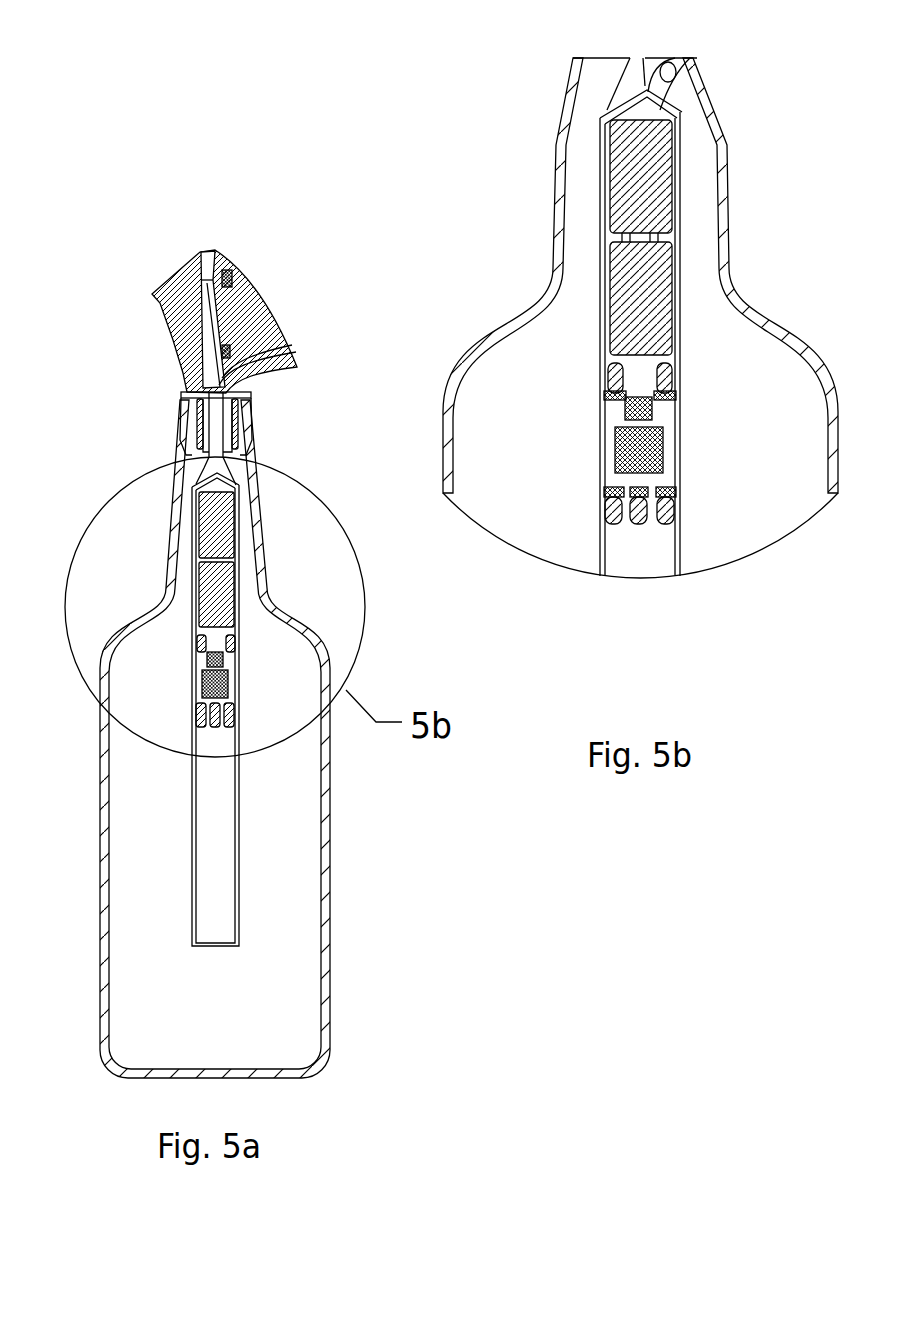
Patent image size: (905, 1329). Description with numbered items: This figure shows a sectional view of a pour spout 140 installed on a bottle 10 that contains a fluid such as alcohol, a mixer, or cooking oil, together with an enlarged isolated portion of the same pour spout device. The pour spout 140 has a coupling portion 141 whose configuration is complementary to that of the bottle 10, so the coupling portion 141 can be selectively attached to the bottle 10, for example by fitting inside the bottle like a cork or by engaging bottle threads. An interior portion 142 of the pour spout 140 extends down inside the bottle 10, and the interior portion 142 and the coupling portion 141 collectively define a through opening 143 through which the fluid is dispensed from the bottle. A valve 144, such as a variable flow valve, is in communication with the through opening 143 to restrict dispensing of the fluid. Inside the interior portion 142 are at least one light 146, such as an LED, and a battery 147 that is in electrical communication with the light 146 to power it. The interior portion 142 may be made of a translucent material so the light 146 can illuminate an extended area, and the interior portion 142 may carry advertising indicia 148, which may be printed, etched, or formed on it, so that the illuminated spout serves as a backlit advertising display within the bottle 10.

In FIG. 5A, the bottle 10 is at (327, 1064).
In FIG. 5B, the bottle 10 is at (790, 333).
In FIG. 5A, the pour spout 140 is at (276, 278).
In FIG. 5A, the coupling portion 141 is at (244, 417).
In FIG. 5A, the interior portion 142 is at (244, 603).
In FIG. 5B, the interior portion 142 is at (575, 372).
In FIG. 5A, the through opening 143 is at (270, 357).
In FIG. 5A, the valve 144 is at (218, 459).
In FIG. 5A, the light 146 is at (226, 268).
In FIG. 5B, the light 146 is at (612, 525).
In FIG. 5B, the battery 147 is at (657, 253).
In FIG. 5A, the advertising indicia 148 is at (192, 840).